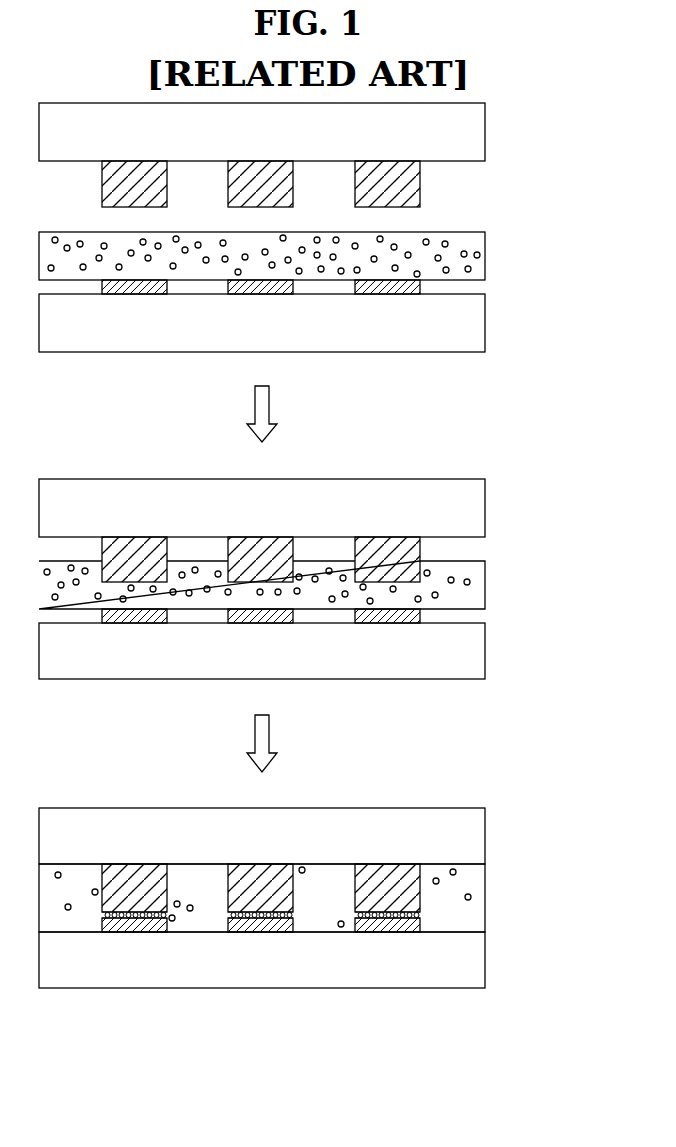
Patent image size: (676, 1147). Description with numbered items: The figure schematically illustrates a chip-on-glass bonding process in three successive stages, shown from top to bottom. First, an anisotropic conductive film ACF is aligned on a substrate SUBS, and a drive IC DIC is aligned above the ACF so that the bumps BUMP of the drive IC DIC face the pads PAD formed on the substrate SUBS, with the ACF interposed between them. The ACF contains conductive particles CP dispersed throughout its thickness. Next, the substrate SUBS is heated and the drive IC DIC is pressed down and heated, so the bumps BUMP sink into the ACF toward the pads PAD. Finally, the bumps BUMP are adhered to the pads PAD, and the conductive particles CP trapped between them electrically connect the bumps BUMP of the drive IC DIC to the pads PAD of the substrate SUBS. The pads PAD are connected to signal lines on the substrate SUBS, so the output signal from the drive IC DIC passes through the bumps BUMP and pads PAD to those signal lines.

The drive IC DIC is at (473, 133).
The bumps BUMP is at (421, 185).
The element ACF is at (475, 265).
The conductive particles CP is at (465, 238).
The pads PAD is at (393, 294).
The substrate SUBS is at (473, 323).